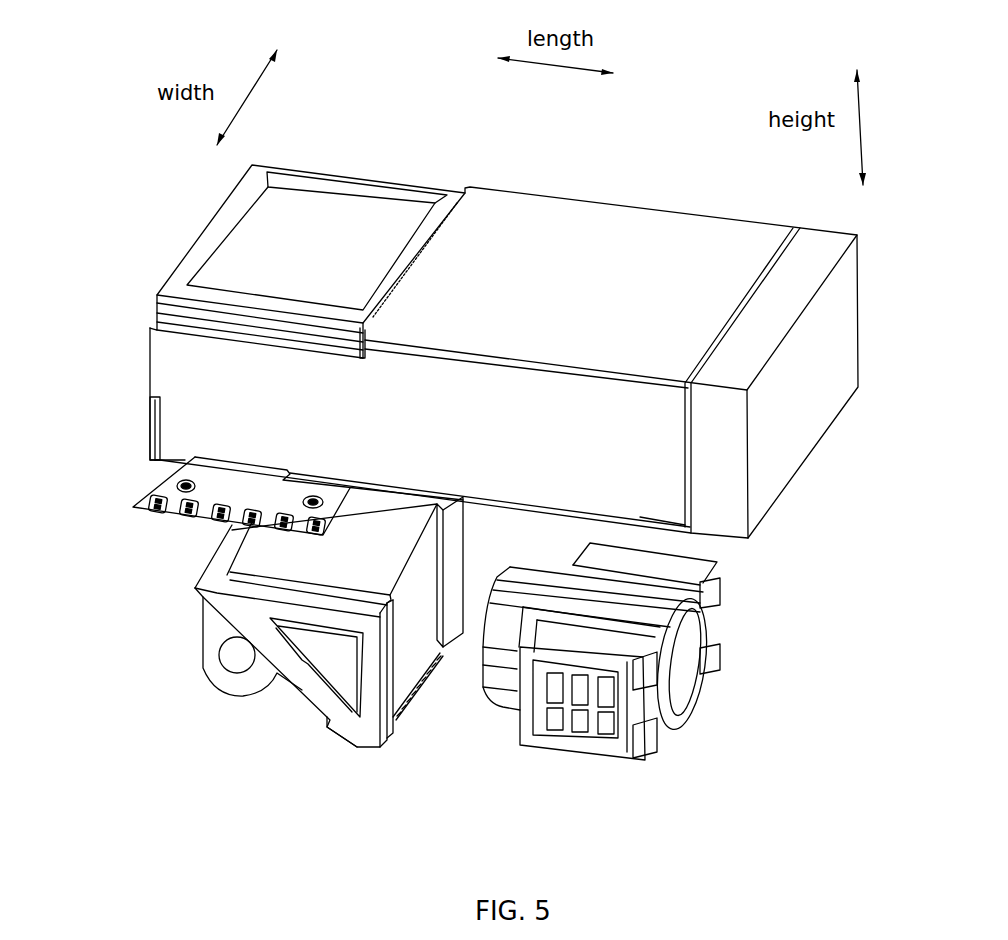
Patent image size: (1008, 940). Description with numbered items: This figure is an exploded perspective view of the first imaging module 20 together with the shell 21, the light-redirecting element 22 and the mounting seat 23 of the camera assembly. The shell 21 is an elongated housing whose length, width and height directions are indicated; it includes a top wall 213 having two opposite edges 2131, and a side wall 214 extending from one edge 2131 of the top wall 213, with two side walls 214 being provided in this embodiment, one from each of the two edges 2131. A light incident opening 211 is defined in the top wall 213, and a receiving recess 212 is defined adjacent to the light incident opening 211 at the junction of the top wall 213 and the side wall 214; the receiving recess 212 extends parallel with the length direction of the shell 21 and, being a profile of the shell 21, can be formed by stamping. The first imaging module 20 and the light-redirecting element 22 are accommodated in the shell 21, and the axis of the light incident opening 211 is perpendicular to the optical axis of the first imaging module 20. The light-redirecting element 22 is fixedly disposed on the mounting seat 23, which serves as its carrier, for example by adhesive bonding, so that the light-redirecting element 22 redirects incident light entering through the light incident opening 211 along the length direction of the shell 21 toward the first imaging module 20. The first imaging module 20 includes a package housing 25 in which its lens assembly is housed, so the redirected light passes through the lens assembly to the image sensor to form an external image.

The first imaging module 20 is at (122, 115).
The shell 21 is at (500, 188).
The light incident opening 211 is at (237, 231).
The receiving recess 212 is at (157, 317).
The top wall 213 is at (622, 223).
The edge 2131 is at (615, 380).
The side wall 214 is at (170, 415).
The light-redirecting element 22 is at (410, 667).
The mounting seat 23 is at (257, 677).
The package housing 25 is at (625, 757).